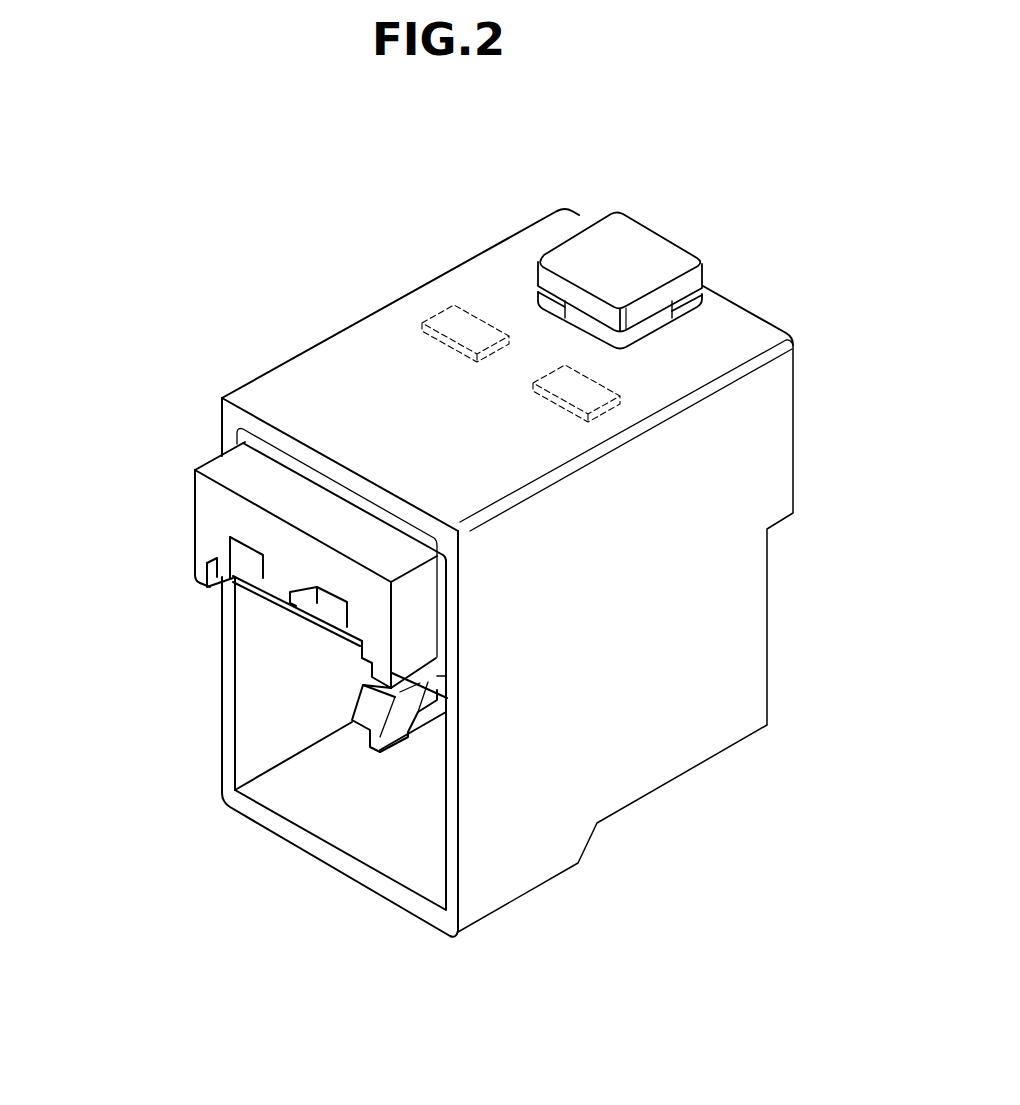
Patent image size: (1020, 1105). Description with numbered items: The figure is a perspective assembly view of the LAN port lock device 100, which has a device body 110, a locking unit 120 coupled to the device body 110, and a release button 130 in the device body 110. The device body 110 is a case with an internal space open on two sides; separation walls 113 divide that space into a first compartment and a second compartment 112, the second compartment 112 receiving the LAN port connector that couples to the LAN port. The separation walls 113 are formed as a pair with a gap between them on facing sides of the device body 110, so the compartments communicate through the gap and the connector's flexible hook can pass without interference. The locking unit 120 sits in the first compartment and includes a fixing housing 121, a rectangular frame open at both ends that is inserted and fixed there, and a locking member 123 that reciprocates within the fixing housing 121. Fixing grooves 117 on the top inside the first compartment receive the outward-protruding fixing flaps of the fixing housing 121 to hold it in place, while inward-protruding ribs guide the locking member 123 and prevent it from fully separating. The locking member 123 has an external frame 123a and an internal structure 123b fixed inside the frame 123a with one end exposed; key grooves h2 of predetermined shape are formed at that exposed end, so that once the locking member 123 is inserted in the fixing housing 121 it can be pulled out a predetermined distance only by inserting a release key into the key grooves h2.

The LAN port lock device 100 is at (287, 260).
The device body 110 is at (500, 229).
The second compartment 112 is at (341, 831).
The separation walls 113 is at (428, 670).
The fixing grooves 117 is at (443, 318).
The locking unit 120 is at (186, 520).
The fixing housing 121 is at (238, 430).
The locking member 123 is at (267, 585).
The external frame 123a is at (422, 637).
The internal structure 123b is at (285, 570).
The release button 130 is at (662, 250).
The key grooves h2 is at (235, 547).